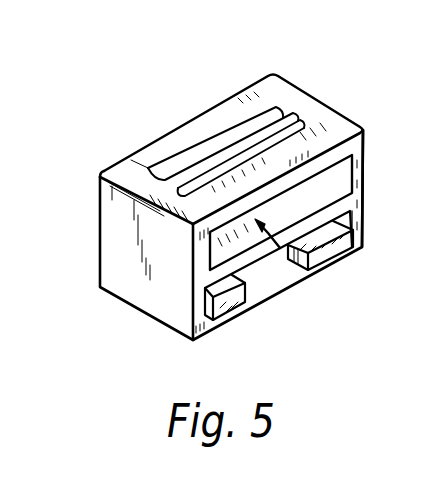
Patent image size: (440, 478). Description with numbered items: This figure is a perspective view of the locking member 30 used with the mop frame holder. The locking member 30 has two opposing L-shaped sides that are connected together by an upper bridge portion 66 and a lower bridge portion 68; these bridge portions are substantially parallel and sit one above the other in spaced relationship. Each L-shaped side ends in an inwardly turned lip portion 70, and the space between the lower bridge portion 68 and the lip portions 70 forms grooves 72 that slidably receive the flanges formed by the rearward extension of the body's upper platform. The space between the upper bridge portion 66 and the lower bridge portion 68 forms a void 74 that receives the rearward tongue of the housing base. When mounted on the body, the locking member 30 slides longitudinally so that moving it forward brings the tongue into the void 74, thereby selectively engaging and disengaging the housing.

The locking member 30 is at (137, 325).
The upper bridge portion 66 is at (313, 140).
The lower bridge portion 68 is at (244, 246).
The inwardly turned lip portion 70 is at (237, 312).
The grooves 72 is at (367, 240).
The void 74 is at (280, 248).